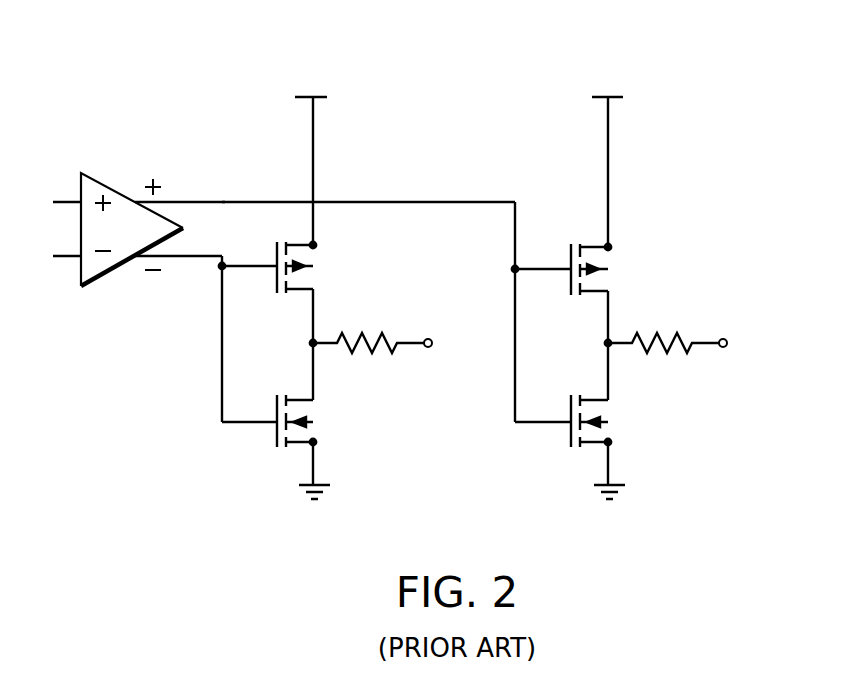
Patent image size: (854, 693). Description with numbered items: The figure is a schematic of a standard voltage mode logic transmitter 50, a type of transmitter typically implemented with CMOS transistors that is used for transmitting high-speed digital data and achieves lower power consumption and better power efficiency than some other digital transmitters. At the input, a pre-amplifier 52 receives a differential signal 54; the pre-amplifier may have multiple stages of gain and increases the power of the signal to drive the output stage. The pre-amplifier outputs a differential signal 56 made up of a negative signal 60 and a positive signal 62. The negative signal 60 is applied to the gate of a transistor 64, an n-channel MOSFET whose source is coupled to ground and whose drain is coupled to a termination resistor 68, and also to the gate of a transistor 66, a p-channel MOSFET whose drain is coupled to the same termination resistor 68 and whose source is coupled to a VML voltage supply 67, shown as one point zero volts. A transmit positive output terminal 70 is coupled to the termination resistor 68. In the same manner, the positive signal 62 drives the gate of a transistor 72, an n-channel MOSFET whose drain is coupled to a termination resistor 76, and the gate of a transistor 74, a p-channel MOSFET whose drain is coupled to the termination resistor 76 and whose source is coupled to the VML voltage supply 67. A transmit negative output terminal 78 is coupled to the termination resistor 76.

The VML transmitter 50 is at (730, 136).
The pre-amplifier 52 is at (131, 180).
The differential signal 54 is at (54, 208).
The differential signal 56 is at (192, 244).
The negative signal 60 is at (201, 259).
The positive signal 62 is at (292, 200).
The transistor 64 is at (282, 460).
The transistor 66 is at (282, 302).
The VML voltage supply 67 is at (351, 91).
The termination resistor 68 is at (372, 330).
The transmit positive output terminal 70 is at (426, 339).
The transistor 72 is at (578, 460).
The transistor 74 is at (576, 304).
The termination resistor 76 is at (668, 330).
The transmit negative output terminal 78 is at (722, 339).